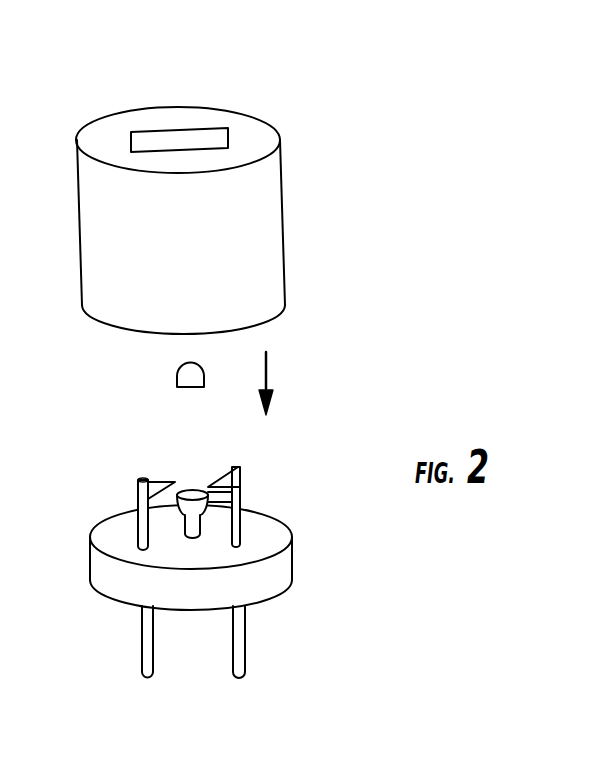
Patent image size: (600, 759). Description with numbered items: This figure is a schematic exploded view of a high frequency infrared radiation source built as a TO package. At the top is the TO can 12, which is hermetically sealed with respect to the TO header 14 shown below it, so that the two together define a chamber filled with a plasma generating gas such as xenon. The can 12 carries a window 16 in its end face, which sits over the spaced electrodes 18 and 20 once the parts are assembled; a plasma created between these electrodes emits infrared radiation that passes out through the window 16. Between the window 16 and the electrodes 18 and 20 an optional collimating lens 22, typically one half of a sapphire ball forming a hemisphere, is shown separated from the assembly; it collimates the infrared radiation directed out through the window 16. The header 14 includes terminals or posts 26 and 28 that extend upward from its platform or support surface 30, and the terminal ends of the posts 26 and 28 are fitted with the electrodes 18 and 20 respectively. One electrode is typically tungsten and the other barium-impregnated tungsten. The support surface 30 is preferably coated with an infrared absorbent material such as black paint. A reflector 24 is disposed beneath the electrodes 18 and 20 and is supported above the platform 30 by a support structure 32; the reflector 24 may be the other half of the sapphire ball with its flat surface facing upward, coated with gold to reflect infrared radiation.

The TO can 12 is at (283, 232).
The TO header 14 is at (292, 565).
The window 16 is at (178, 138).
The electrode 18 is at (168, 480).
The electrode 20 is at (222, 479).
The collimating lens 22 is at (205, 373).
The reflector 24 is at (241, 489).
The post 26 is at (245, 655).
The post 28 is at (153, 660).
The support surface 30 is at (260, 532).
The support structure 32 is at (185, 530).